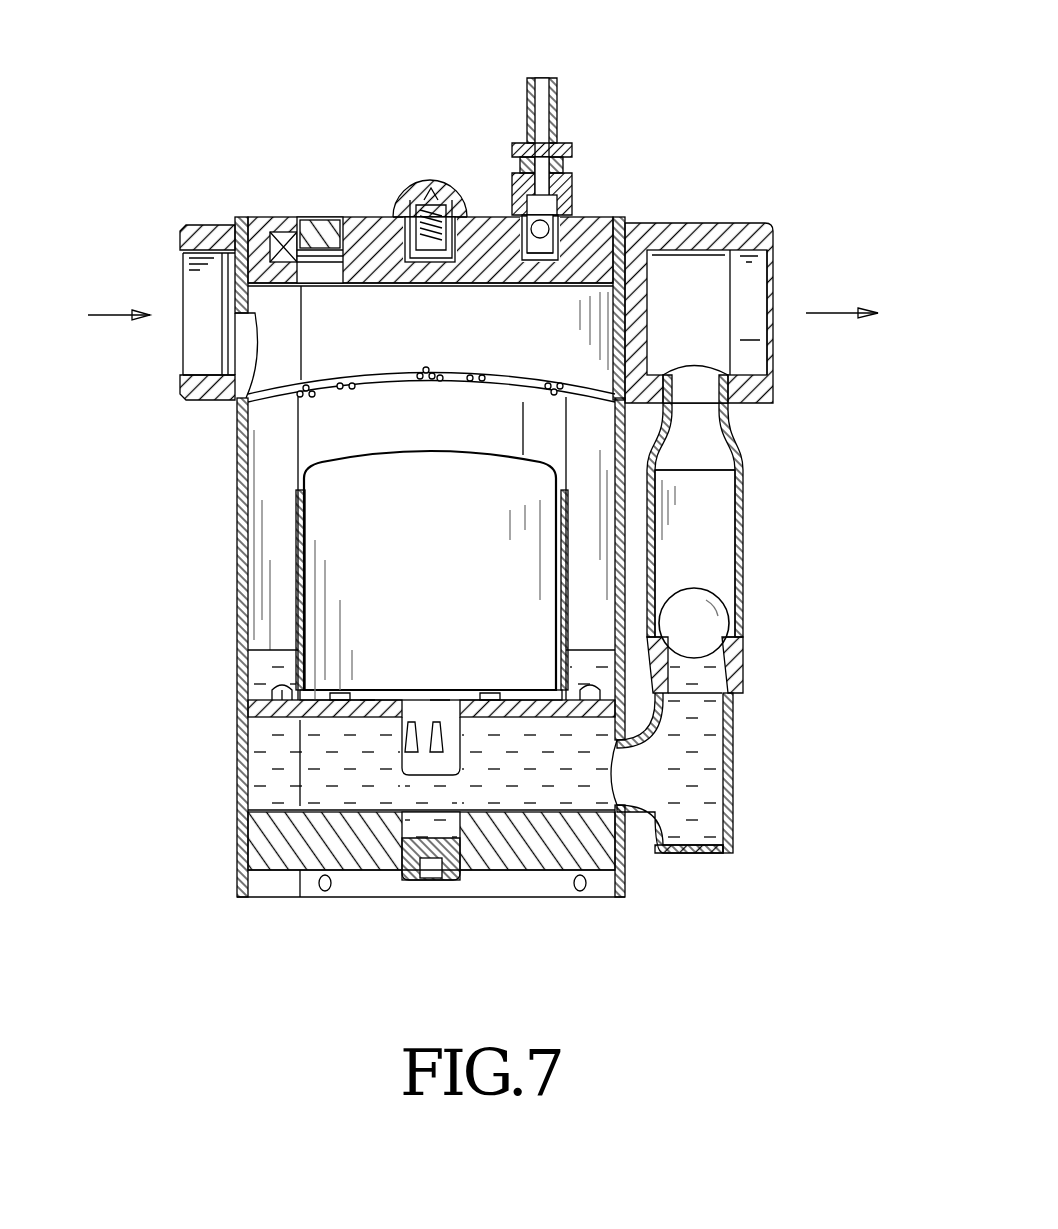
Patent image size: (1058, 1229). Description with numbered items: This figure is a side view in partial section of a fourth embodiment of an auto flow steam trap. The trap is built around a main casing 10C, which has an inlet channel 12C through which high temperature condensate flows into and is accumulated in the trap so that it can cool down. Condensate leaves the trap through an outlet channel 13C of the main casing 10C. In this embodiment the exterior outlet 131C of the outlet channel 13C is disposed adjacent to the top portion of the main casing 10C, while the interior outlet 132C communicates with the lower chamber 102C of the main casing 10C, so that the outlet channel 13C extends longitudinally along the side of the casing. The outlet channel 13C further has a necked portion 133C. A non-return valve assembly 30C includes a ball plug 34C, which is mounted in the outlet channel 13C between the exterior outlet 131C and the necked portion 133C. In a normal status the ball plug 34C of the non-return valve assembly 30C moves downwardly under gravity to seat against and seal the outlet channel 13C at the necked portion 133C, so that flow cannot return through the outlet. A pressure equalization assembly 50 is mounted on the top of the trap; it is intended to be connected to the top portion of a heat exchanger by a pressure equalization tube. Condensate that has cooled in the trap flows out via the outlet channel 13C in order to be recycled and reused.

The pressure equalization assembly 50 is at (583, 117).
The inlet channel 12C is at (218, 300).
The exterior outlet 131C is at (750, 251).
The main casing 10C is at (236, 512).
The non-return valve assembly 30C is at (697, 570).
The outlet channel 13C is at (738, 570).
The ball plug 34C is at (712, 620).
The necked portion 133C is at (733, 673).
The interior outlet 132C is at (620, 803).
The lower chamber 102C is at (333, 785).